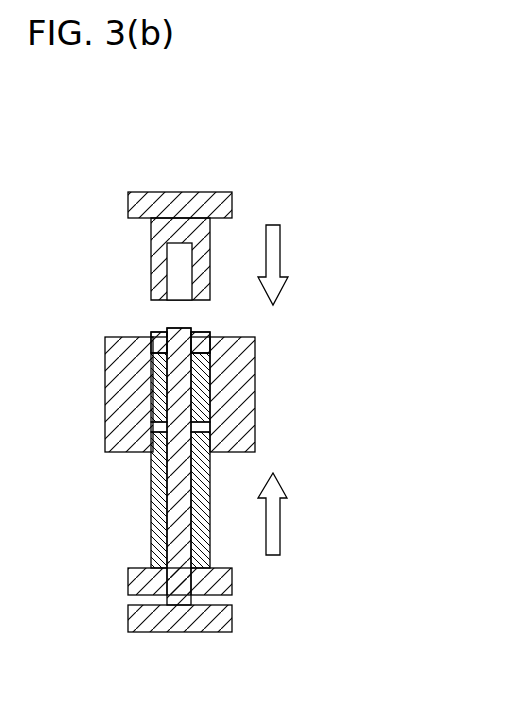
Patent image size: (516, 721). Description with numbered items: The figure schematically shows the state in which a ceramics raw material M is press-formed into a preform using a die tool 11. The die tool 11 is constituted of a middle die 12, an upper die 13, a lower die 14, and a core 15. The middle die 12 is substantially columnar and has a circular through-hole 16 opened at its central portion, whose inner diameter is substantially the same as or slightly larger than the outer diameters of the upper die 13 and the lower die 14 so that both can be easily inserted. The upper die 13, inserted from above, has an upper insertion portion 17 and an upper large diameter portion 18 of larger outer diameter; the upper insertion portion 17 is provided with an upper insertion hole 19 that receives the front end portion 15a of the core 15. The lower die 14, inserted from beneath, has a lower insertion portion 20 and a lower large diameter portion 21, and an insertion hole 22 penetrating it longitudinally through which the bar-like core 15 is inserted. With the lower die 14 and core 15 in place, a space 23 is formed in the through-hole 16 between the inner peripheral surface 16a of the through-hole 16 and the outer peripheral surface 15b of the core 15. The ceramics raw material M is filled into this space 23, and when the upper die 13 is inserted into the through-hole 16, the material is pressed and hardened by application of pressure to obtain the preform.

The die tool 11 is at (305, 386).
The middle die 12 is at (244, 427).
The upper die 13 is at (192, 211).
The lower die 14 is at (191, 508).
The core 15 is at (197, 632).
The front end portion 15a is at (158, 335).
The outer peripheral surface 15b is at (203, 333).
The through-hole 16 is at (188, 337).
The inner peripheral surface 16a is at (205, 336).
The upper insertion portion 17 is at (150, 273).
The upper large diameter portion 18 is at (229, 204).
The upper insertion hole 19 is at (180, 292).
The lower insertion portion 20 is at (174, 445).
The lower large diameter portion 21 is at (140, 580).
The insertion hole 22 is at (160, 538).
The space 23 is at (152, 352).
The ceramics raw material M is at (158, 388).